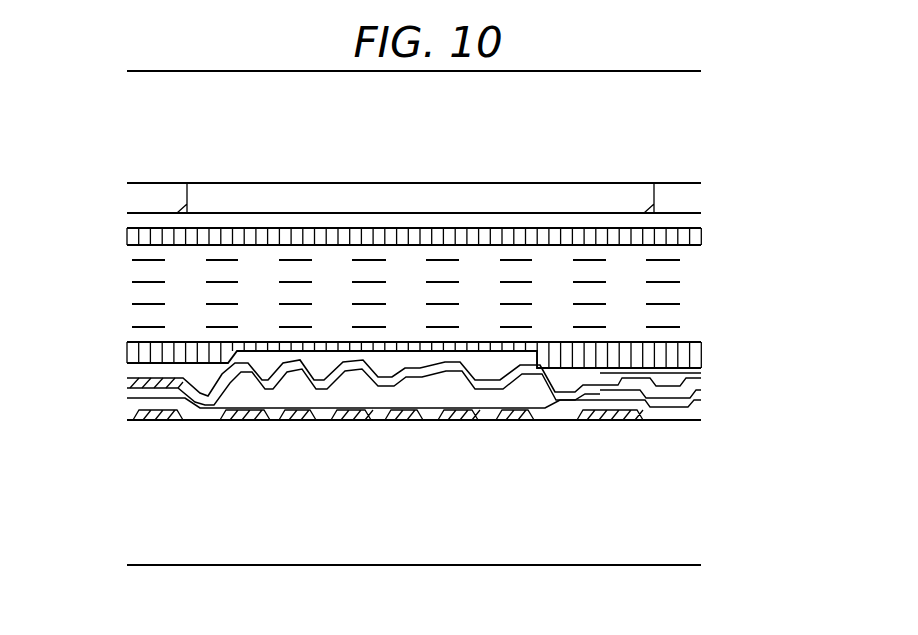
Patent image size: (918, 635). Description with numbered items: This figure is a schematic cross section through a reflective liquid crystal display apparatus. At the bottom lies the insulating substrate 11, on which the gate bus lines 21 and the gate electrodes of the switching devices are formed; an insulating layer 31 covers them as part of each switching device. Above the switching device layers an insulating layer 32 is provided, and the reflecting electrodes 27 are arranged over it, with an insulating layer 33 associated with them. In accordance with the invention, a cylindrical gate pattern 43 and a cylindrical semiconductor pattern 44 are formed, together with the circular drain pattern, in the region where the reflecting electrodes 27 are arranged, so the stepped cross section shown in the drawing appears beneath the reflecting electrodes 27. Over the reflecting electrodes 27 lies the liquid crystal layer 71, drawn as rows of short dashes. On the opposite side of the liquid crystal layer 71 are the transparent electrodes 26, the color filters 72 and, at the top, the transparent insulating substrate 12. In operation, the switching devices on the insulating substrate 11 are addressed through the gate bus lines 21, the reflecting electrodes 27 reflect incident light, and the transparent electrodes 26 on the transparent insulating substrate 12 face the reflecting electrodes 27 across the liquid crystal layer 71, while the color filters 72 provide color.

The insulating substrate 11 is at (685, 489).
The transparent insulating substrate 12 is at (153, 132).
The gate bus lines 21 is at (600, 415).
The transparent electrodes 26 is at (138, 223).
The reflecting electrodes 27 is at (643, 391).
The insulating layer 31 is at (267, 415).
The insulating layer 32 is at (130, 397).
The insulating layer 33 is at (605, 375).
The cylindrical gate pattern 43 is at (403, 415).
The cylindrical semiconductor pattern 44 is at (475, 415).
The liquid crystal layer 71 is at (147, 313).
The color filters 72 is at (162, 195).